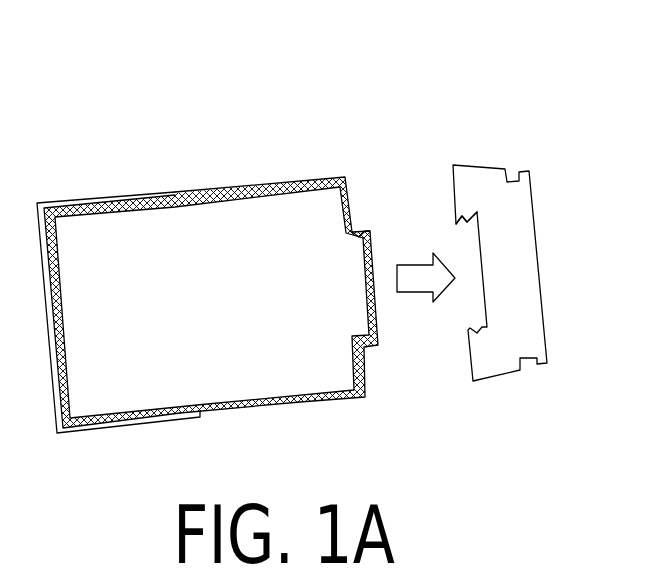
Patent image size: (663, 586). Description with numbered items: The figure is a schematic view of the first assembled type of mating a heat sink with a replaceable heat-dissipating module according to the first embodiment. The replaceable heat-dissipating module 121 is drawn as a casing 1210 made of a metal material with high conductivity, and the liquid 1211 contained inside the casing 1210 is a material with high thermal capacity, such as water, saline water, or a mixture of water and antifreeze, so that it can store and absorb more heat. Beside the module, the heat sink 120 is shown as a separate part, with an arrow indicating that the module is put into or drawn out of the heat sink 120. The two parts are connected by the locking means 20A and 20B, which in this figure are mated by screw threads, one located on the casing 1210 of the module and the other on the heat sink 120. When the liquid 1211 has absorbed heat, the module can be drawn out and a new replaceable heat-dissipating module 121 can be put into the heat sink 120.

The replaceable heat-dissipating module 121 is at (255, 78).
The liquid 1211 is at (147, 235).
The casing 1210 is at (221, 190).
The locking means 20A is at (363, 232).
The locking means 20B is at (455, 224).
The heat sink 120 is at (481, 192).